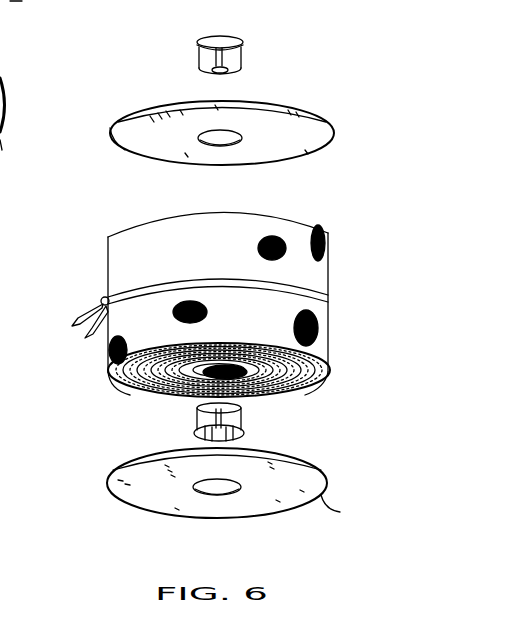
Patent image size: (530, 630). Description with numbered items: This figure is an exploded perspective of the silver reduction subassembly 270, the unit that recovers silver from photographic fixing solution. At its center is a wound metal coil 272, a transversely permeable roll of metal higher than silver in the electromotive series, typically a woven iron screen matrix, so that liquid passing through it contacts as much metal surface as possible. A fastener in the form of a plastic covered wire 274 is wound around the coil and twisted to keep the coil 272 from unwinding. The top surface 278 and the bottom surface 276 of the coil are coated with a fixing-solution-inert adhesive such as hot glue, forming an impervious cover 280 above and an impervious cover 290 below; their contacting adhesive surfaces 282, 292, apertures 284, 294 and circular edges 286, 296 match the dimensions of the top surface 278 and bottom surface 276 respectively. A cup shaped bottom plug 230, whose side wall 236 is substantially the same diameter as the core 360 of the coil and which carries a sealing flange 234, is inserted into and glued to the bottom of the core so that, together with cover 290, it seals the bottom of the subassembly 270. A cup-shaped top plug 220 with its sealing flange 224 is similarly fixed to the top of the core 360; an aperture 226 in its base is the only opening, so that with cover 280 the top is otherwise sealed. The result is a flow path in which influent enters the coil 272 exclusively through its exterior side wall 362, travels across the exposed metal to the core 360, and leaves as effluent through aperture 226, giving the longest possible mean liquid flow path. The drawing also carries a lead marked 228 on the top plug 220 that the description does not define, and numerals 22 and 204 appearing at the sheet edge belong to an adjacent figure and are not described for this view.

The housing (adjacent figure fragment) 22 is at (11, 158).
The hose (adjacent figure fragment) 204 is at (0, 96).
The top plug 220 is at (233, 59).
The sealing flange 224 is at (243, 44).
The aperture 226 is at (212, 72).
The fitting body 228 is at (198, 58).
The bottom plug 230 is at (236, 408).
The sealing flange 234 is at (246, 430).
The side wall 236 is at (243, 408).
The silver reduction subassembly 270 is at (219, 285).
The wound metal coil 272 is at (330, 330).
The plastic covered wire 274 is at (101, 301).
The bottom surface 276 is at (108, 377).
The top surface 278 is at (143, 220).
The impervious cover 280 is at (231, 161).
The contacting adhesive surface 282 is at (290, 147).
The aperture 284 is at (216, 146).
The circular edge 286 is at (110, 135).
The impervious cover 290 is at (211, 500).
The contacting adhesive surface 292 is at (313, 463).
The aperture 294 is at (217, 496).
The circular edge 296 is at (327, 490).
The core 360 is at (165, 403).
The exterior surface 362 is at (265, 319).